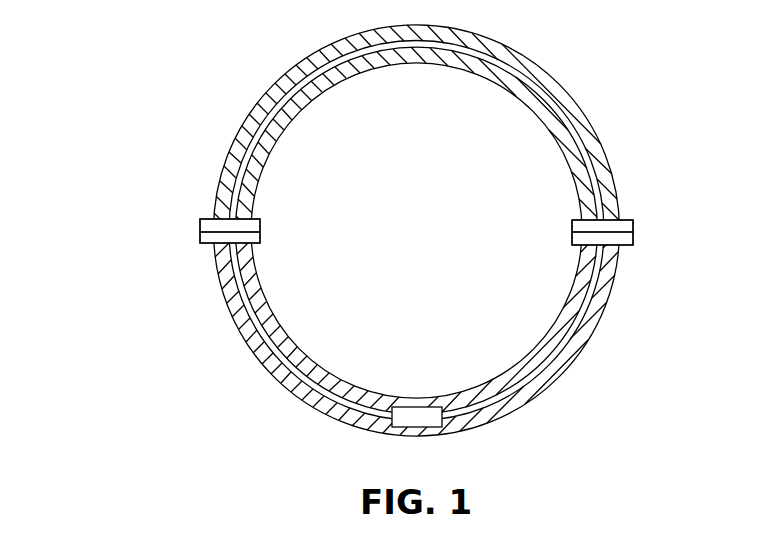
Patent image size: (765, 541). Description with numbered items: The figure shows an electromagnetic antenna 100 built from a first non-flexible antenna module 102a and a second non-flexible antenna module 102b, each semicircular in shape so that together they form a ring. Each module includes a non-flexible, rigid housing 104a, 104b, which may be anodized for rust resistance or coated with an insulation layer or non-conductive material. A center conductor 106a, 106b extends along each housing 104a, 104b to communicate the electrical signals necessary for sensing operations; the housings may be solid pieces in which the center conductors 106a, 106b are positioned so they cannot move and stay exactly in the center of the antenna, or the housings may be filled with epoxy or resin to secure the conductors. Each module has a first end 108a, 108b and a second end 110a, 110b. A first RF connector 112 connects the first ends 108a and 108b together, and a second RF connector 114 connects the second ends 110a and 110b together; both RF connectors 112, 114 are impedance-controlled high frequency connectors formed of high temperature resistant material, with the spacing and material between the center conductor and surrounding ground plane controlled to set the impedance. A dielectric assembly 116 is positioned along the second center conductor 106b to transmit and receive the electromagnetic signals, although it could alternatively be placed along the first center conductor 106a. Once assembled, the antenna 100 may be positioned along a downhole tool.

The antenna 100 is at (118, 54).
The first non-flexible antenna module 102a is at (538, 57).
The second non-flexible antenna module 102b is at (572, 383).
The non-flexible housing 104a is at (240, 142).
The non-flexible housing 104b is at (513, 403).
The center conductor 106a is at (293, 76).
The center conductor 106b is at (270, 366).
The first end 108a is at (623, 220).
The first end 108b is at (626, 246).
The second end 110a is at (205, 219).
The second end 110b is at (206, 244).
The first RF connector 112 is at (565, 231).
The second RF connector 114 is at (272, 225).
The dielectric assembly 116 is at (425, 406).